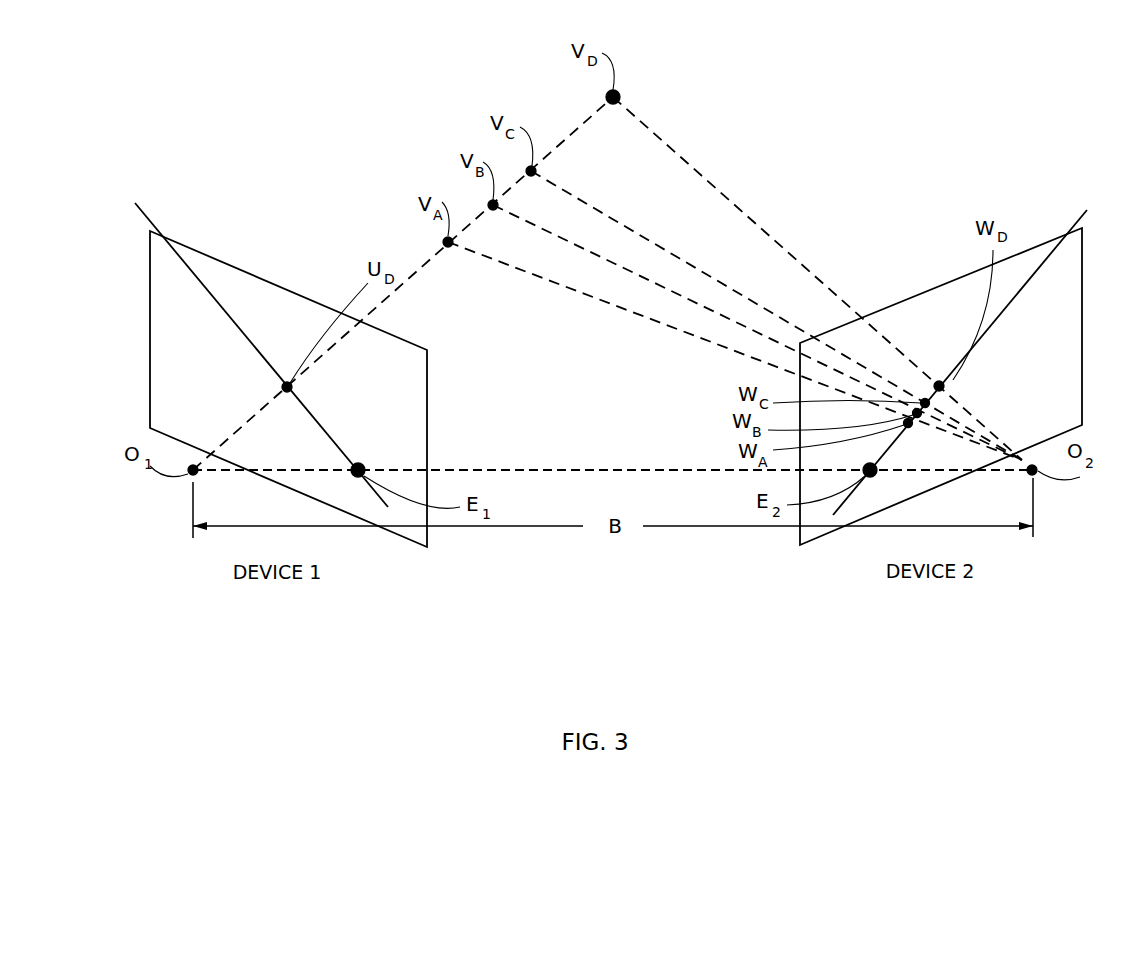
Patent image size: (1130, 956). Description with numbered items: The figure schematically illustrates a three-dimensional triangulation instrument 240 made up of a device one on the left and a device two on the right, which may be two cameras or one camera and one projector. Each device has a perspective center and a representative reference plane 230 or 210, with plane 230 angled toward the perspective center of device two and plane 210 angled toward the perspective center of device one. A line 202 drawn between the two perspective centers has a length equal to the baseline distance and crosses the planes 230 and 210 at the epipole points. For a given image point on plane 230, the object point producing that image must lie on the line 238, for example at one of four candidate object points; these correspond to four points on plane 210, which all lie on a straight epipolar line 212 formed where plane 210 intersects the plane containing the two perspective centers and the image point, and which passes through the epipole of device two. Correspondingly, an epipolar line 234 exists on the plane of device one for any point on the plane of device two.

The line 202 is at (610, 470).
The reference plane 210 is at (1032, 248).
The epipolar line 212 is at (1087, 212).
The reference plane 230 is at (263, 278).
The epipolar line 234 is at (147, 217).
The line 238 is at (410, 277).
The 3D triangulation instrument 240 is at (447, 124).